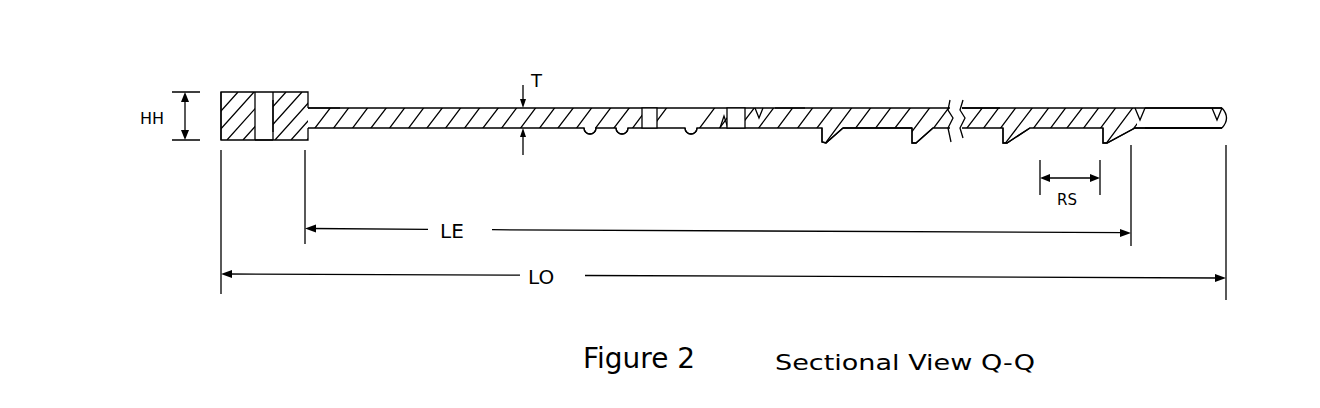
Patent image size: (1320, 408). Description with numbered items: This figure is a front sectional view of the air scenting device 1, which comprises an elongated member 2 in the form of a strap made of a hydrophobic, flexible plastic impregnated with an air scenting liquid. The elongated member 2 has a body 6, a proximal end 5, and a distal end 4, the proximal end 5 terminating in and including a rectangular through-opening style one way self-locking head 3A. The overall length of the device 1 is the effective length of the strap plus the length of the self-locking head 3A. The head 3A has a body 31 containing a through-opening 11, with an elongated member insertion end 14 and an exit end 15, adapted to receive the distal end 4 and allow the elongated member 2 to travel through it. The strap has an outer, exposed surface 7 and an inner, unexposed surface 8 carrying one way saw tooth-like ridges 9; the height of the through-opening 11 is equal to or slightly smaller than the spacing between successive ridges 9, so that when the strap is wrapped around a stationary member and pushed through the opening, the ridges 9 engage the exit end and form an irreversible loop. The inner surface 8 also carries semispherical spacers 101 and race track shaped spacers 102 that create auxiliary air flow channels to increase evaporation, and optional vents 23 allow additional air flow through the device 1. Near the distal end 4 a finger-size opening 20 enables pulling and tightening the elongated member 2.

The air scenting device 1 is at (874, 39).
The elongated member 2 is at (1068, 118).
The one way self-locking head 3A is at (275, 119).
The body of one way self-locking head 31 is at (237, 97).
The elongated member exit end of through-opening 15 is at (265, 108).
The through-opening 11 is at (264, 134).
The elongated member insertion end of through-opening 14 is at (268, 136).
The proximal end of elongated member 5 is at (330, 112).
The vents 23 is at (648, 118).
The semispherical shape type spacers/projections/protrusions 101 is at (626, 136).
The race track shape type spacers/projections/protrusions 102 is at (588, 136).
The body of elongated member 6 is at (790, 117).
The outer surface of elongated member 7 is at (976, 110).
The inner surface of elongated member 8 is at (882, 128).
The one way saw tooth-like ridges 9 is at (836, 133).
The finger-size opening 20 is at (1168, 118).
The distal end of elongated member 4 is at (1228, 118).